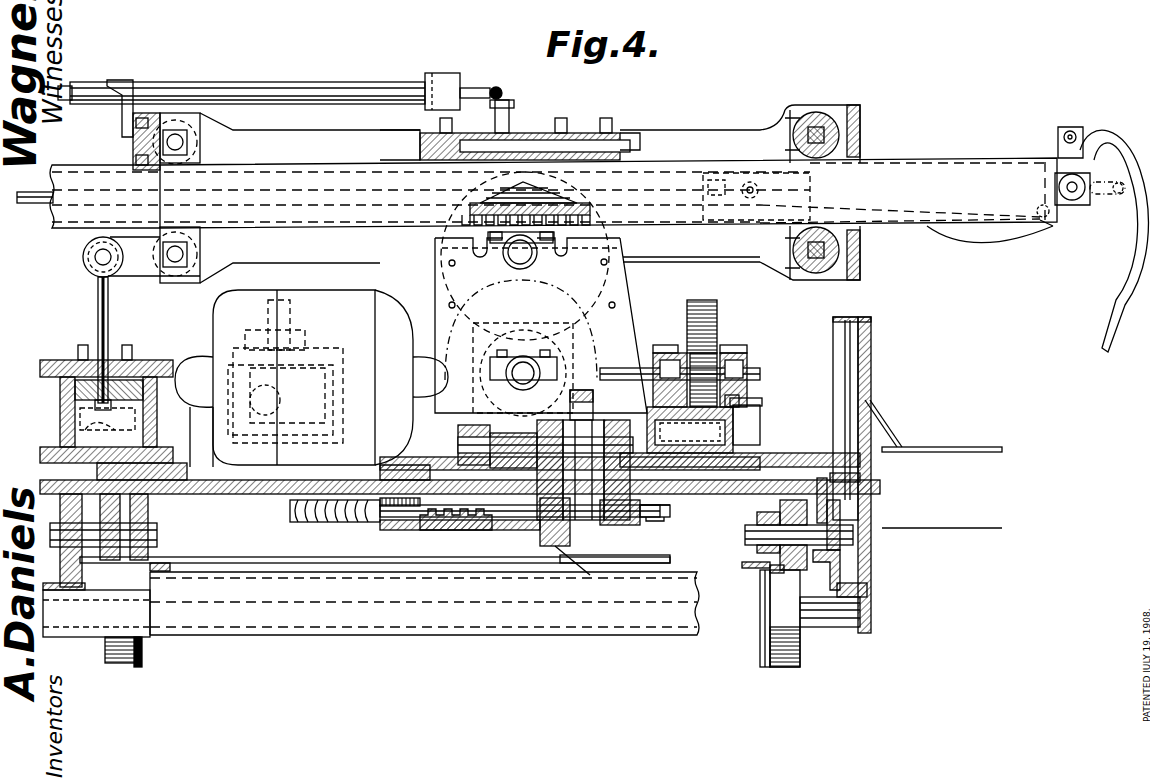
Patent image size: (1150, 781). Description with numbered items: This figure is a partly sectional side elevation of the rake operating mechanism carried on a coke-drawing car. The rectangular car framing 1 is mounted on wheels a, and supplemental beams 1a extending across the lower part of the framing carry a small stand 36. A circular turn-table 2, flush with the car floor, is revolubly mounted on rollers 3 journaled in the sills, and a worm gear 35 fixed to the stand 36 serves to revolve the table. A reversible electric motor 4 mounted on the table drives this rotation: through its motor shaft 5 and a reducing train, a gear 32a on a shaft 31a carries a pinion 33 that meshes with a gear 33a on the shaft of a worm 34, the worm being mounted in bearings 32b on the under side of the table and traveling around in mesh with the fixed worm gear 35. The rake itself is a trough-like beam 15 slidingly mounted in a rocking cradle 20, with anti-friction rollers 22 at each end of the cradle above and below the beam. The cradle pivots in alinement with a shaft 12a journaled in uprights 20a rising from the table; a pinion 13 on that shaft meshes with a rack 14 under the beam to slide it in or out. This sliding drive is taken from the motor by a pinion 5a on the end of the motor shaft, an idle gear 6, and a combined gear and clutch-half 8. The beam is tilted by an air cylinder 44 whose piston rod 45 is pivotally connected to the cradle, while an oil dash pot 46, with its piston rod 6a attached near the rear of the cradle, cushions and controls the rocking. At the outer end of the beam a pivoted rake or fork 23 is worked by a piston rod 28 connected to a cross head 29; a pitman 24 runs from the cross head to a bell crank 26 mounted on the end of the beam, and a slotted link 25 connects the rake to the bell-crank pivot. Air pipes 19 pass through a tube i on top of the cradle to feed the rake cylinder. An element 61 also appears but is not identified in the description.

The tube i is at (303, 84).
The air pipes 19 is at (80, 95).
The rocking cross head or cradle 20 is at (570, 133).
The rake beam 15 is at (105, 196).
The piston rod 28 is at (43, 204).
The anti-friction rollers 22 is at (200, 140).
The cross head 29 is at (727, 182).
The bell crank 26 is at (1068, 158).
The slotted link 25 is at (1087, 203).
The pivoted rake or fork 23 is at (1130, 240).
The pitman 24 is at (1006, 230).
The rack 14 is at (475, 215).
The pinion 13 is at (535, 252).
The shaft 12a is at (518, 250).
The uprights 20a is at (615, 290).
The motor shaft 5 is at (618, 382).
The combined gear and clutch-half 8 is at (686, 306).
The idle gear 6 is at (712, 340).
The pinion 5a is at (735, 412).
The gear 32a is at (690, 430).
The shaft 31a is at (495, 437).
The pinion 33 is at (540, 440).
The reversible electric motor 4 is at (225, 343).
The piston rod of dash pot 6a is at (268, 330).
The oil dash pot 46 is at (318, 395).
The piston rod 45 is at (97, 301).
The air cylinder 44 is at (40, 413).
The turn-table 2 is at (205, 495).
The worm gear 35 is at (290, 515).
The worm 34 is at (440, 530).
The bearings 32b is at (672, 520).
The stand or platform 36 is at (622, 562).
The gear 33a is at (579, 572).
The car framing 1 is at (42, 482).
The rollers 3 is at (118, 568).
The supplemental beams 1a is at (512, 615).
The wheels a is at (142, 650).
The arm 61 is at (962, 448).